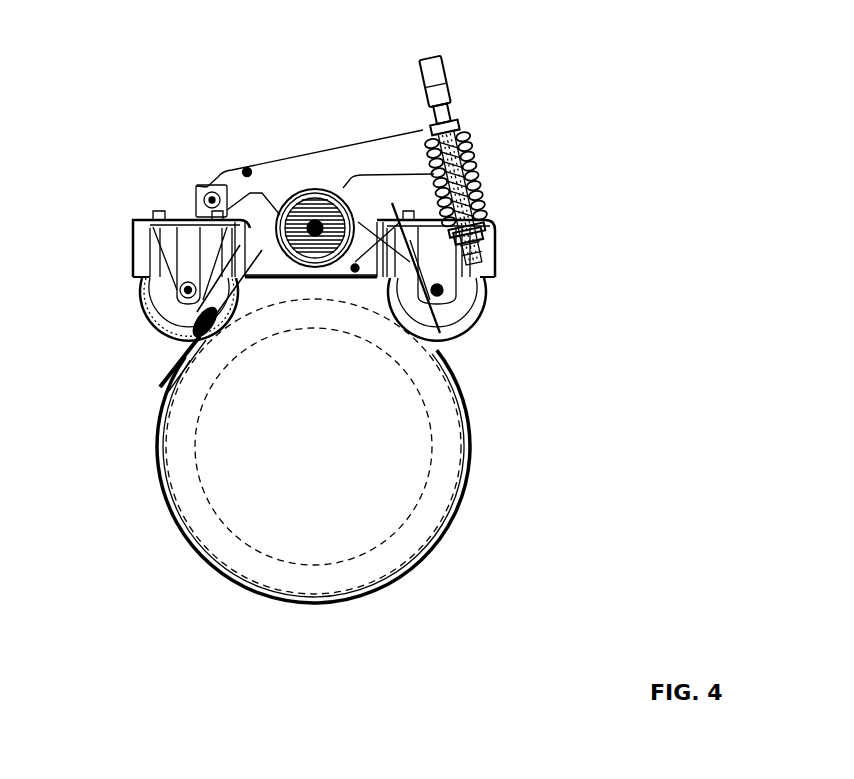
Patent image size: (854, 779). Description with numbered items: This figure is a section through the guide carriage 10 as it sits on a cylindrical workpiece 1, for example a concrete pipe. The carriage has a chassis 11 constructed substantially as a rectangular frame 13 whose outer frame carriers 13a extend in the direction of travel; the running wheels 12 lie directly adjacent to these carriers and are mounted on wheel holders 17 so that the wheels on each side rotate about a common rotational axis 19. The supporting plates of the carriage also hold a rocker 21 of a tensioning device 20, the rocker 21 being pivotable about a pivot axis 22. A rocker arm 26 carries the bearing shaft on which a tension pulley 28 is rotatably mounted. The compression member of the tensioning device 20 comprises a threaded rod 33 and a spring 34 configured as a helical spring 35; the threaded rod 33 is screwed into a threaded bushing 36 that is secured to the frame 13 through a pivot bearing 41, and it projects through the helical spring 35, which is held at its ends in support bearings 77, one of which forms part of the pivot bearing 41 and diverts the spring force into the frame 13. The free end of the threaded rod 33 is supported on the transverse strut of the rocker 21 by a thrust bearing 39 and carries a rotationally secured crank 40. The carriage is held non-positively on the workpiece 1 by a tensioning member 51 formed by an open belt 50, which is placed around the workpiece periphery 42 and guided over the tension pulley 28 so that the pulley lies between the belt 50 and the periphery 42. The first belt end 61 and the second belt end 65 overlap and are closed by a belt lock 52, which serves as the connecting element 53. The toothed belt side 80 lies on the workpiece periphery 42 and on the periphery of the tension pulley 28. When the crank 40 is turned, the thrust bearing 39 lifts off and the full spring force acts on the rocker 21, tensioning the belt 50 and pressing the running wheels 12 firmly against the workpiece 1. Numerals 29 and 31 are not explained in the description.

The cylindrical workpiece 1 is at (378, 572).
The guide carriage 10 is at (128, 213).
The chassis 11 is at (330, 279).
The running wheels 12 is at (158, 293).
The rectangular frame 13 is at (497, 268).
The outer frame carrier 13a is at (356, 272).
The wheel holder 17 is at (183, 268).
The rotational axis 19 is at (180, 288).
The tensioning device 20 is at (469, 154).
The rocker 21 is at (268, 160).
The pivot axis 22 is at (196, 186).
The rocker arm 26 is at (302, 166).
The tension pulley 28 is at (318, 205).
The hole 29 is at (245, 168).
The block 31 is at (207, 190).
The threaded rod 33 is at (447, 187).
The spring 34 is at (470, 150).
The helical spring 35 is at (460, 167).
The threaded bushing 36 is at (470, 205).
The thrust bearing 39 is at (425, 122).
The crank 40 is at (433, 74).
The pivot bearing 41 is at (485, 233).
The workpiece periphery 42 is at (413, 565).
The belt 50 is at (467, 498).
The tensioning member 51 is at (450, 537).
The belt lock 52 is at (212, 334).
The connecting element 53 is at (173, 317).
The first belt end 61 is at (203, 334).
The second belt end 65 is at (187, 342).
The support bearing 77 is at (452, 130).
The toothed belt side 80 is at (283, 281).